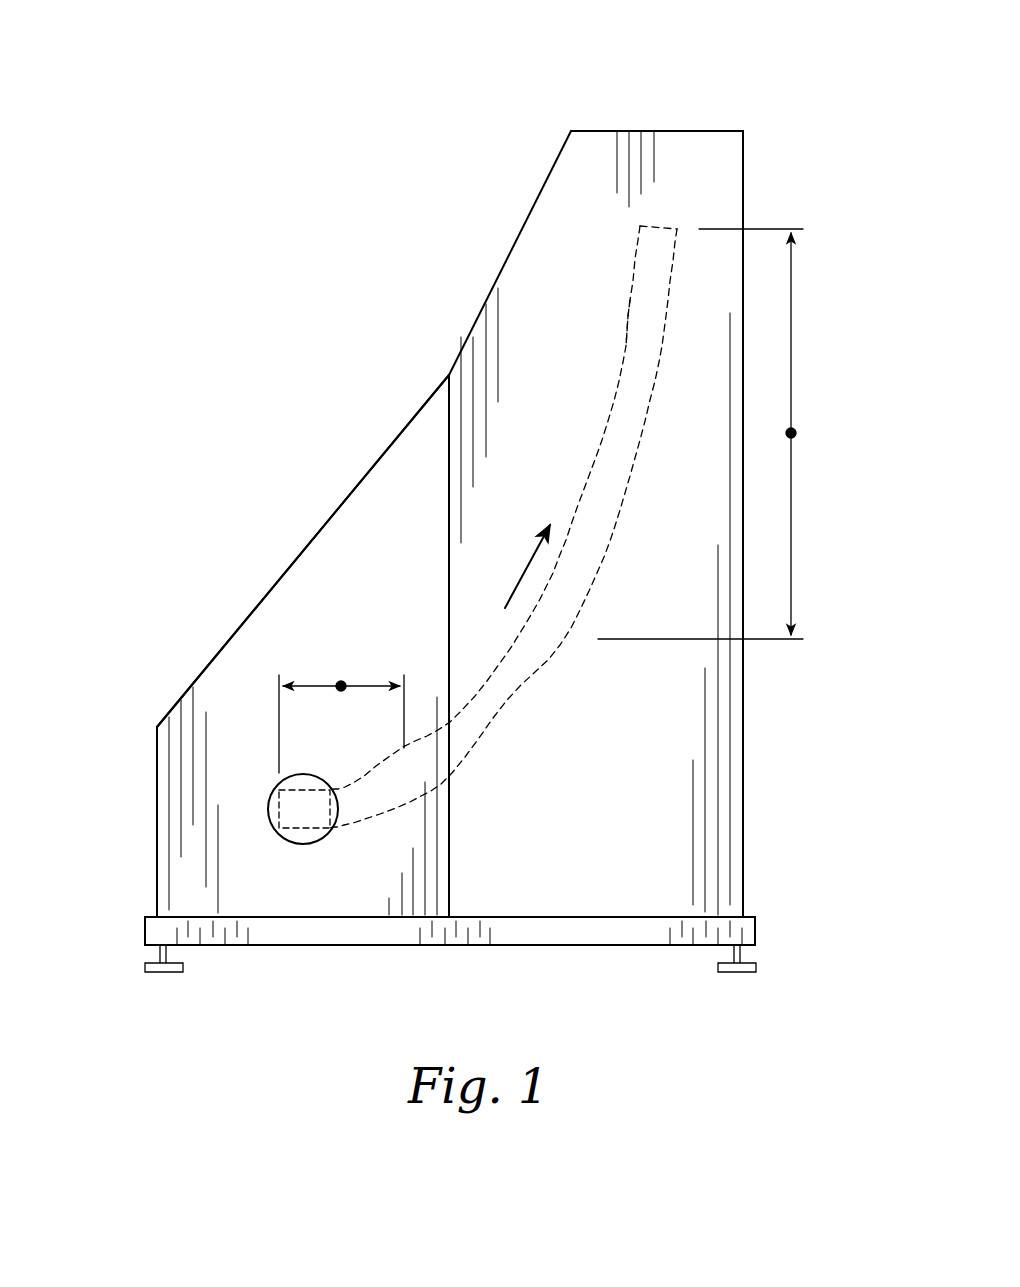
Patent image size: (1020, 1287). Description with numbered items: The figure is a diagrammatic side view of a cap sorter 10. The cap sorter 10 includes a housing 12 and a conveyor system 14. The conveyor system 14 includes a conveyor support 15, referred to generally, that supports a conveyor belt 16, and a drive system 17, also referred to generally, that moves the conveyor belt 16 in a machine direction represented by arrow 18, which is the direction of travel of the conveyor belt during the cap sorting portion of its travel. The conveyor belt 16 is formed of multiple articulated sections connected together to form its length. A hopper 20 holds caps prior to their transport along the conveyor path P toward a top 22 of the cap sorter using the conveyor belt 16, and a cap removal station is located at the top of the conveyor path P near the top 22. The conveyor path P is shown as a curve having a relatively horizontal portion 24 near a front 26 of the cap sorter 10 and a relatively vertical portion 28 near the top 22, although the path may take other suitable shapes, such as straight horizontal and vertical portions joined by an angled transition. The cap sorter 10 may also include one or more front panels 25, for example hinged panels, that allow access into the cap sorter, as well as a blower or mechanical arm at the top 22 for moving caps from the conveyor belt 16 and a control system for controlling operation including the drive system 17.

The cap sorter 10 is at (220, 243).
The housing 12 is at (745, 778).
The conveyor system 14 is at (578, 455).
The conveyor support 15 is at (497, 692).
The conveyor belt 16 is at (632, 292).
The drive system 17 is at (310, 843).
The arrow 18 is at (522, 578).
The hopper 20 is at (227, 647).
The top 22 is at (690, 115).
The relatively horizontal portion 24 is at (341, 682).
The front panels 25 is at (478, 337).
The front 26 is at (150, 827).
The relatively vertical portion 28 is at (796, 433).
The conveyor path P is at (615, 338).